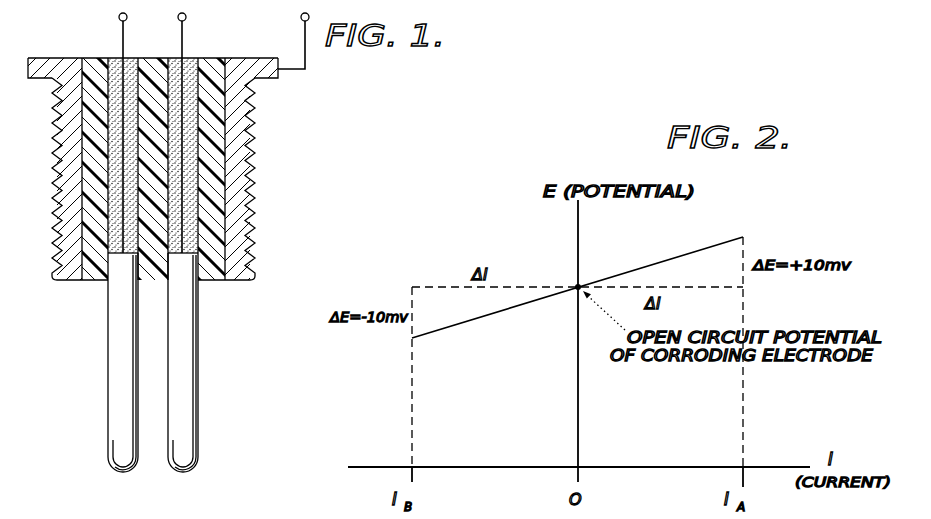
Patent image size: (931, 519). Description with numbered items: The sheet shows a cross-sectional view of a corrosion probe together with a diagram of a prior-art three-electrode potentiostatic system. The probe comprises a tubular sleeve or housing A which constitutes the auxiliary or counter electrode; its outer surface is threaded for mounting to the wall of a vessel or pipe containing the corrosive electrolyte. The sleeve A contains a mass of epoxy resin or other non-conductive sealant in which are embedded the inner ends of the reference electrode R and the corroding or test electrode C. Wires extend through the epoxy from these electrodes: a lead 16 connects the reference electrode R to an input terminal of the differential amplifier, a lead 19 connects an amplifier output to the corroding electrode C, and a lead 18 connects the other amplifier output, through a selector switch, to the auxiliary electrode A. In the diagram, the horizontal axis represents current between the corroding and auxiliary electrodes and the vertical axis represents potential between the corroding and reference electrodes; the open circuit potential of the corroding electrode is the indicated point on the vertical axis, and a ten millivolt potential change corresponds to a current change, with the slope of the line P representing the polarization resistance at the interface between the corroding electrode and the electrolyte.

In FIG. 1, the lead 16 is at (123, 33).
In FIG. 1, the lead 19 is at (182, 38).
In FIG. 1, the lead 18 is at (305, 60).
In FIG. 1, the tubular sleeve or housing A is at (253, 200).
In FIG. 1, the reference electrode R is at (114, 435).
In FIG. 1, the corroding (test) electrode C is at (189, 440).
In FIG. 2, the line P is at (488, 316).